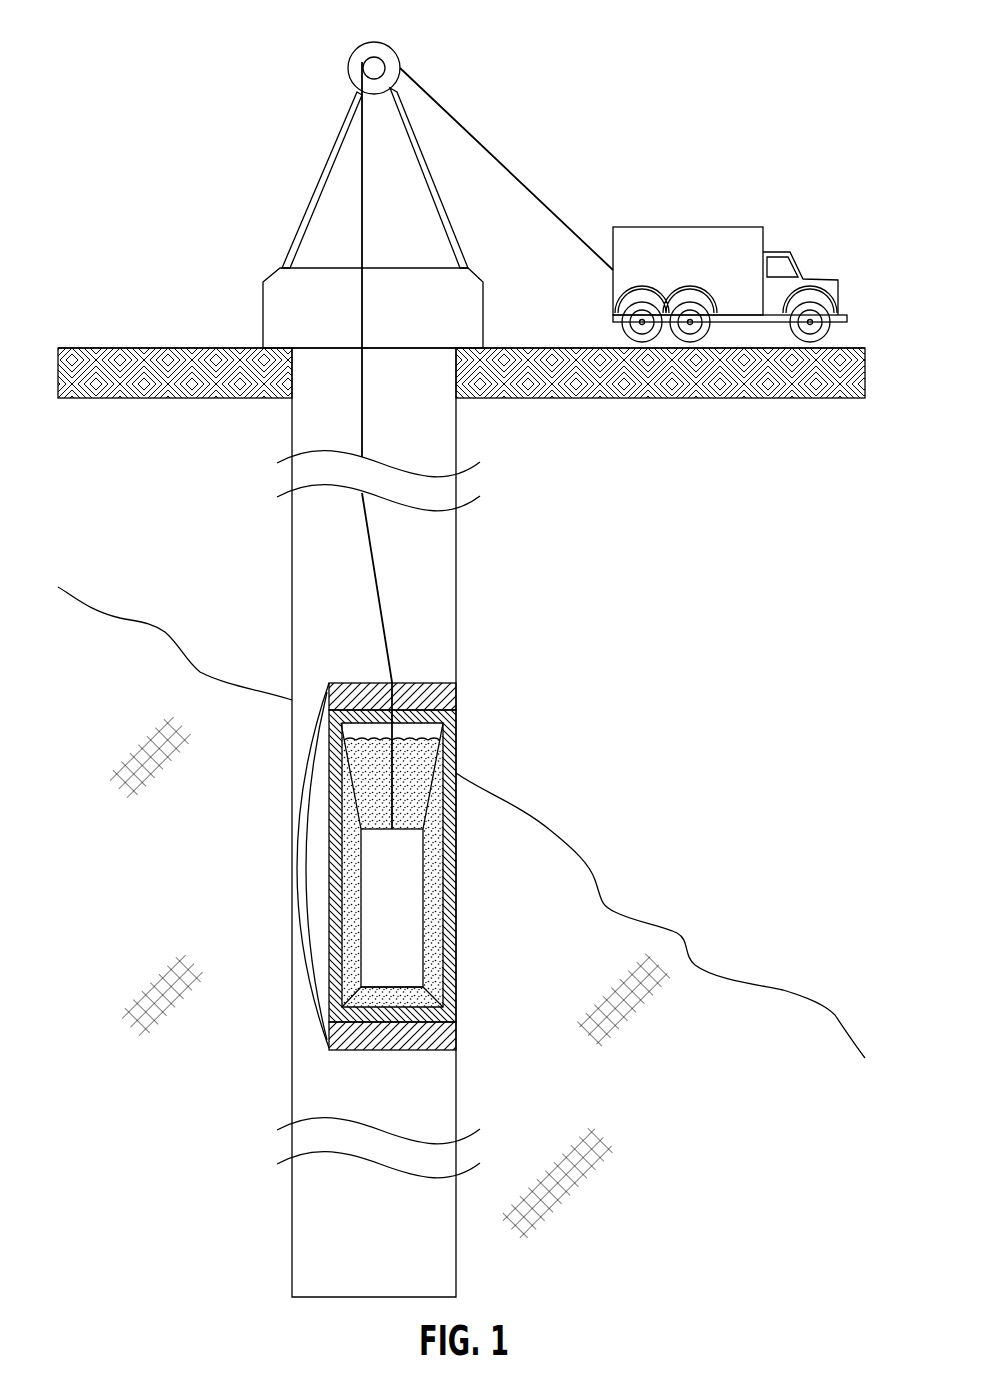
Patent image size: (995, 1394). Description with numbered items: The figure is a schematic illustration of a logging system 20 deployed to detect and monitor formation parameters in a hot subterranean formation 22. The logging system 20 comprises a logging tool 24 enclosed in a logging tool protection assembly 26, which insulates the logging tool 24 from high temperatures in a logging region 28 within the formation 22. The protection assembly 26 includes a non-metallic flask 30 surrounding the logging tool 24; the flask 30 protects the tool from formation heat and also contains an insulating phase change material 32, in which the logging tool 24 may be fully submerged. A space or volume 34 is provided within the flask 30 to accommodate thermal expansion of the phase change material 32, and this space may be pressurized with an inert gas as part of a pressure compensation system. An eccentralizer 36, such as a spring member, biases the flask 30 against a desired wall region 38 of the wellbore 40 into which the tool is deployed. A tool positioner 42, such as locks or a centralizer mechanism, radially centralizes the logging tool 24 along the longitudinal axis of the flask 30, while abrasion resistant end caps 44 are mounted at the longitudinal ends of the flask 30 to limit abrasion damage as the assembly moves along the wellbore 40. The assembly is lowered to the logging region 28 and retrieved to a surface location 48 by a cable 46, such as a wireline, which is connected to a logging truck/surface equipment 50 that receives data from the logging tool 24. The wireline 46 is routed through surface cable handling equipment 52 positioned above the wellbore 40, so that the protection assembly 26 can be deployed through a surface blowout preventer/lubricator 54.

The logging system 20 is at (512, 147).
The subterranean formation 22 is at (100, 897).
The logging tool 24 is at (382, 903).
The logging tool protection assembly 26 is at (308, 1025).
The logging region 28 is at (515, 956).
The flask 30 is at (335, 845).
The phase change material 32 is at (377, 950).
The space or volume 34 is at (420, 727).
The eccentralizer 36 is at (313, 742).
The wall region 38 is at (456, 580).
The wellbore 40 is at (328, 560).
The tool positioner 42 is at (434, 992).
The end caps 44 is at (444, 683).
The cable 46 is at (362, 405).
The surface location 48 is at (105, 347).
The logging truck/surface equipment 50 is at (790, 218).
The surface cable handling equipment 52 is at (348, 66).
The blowout preventer/lubricator 54 is at (483, 318).